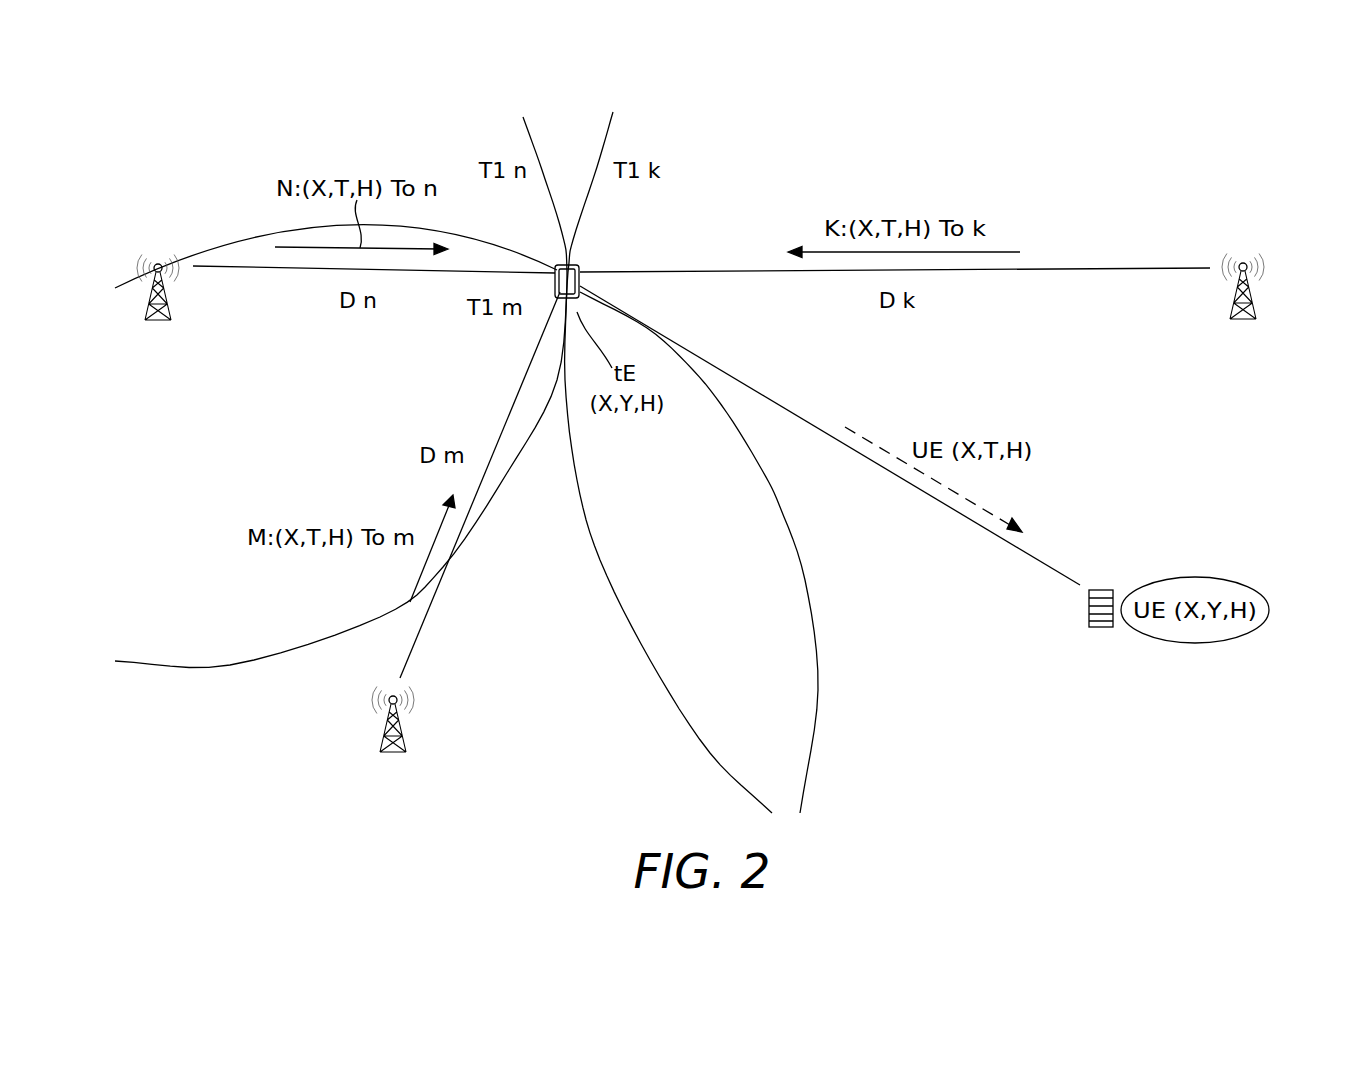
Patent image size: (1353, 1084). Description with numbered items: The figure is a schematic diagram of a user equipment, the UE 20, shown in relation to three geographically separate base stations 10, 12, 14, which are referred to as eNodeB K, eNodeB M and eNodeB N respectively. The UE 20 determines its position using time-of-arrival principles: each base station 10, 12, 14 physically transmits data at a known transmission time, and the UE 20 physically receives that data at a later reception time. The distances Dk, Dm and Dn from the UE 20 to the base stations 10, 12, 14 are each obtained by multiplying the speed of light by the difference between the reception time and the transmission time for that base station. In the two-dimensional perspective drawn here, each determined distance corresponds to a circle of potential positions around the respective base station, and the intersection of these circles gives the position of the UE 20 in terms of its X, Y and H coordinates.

The base station 14 is at (148, 302).
The base station 10 is at (1253, 302).
The base station 12 is at (385, 736).
The UE 20 is at (583, 262).